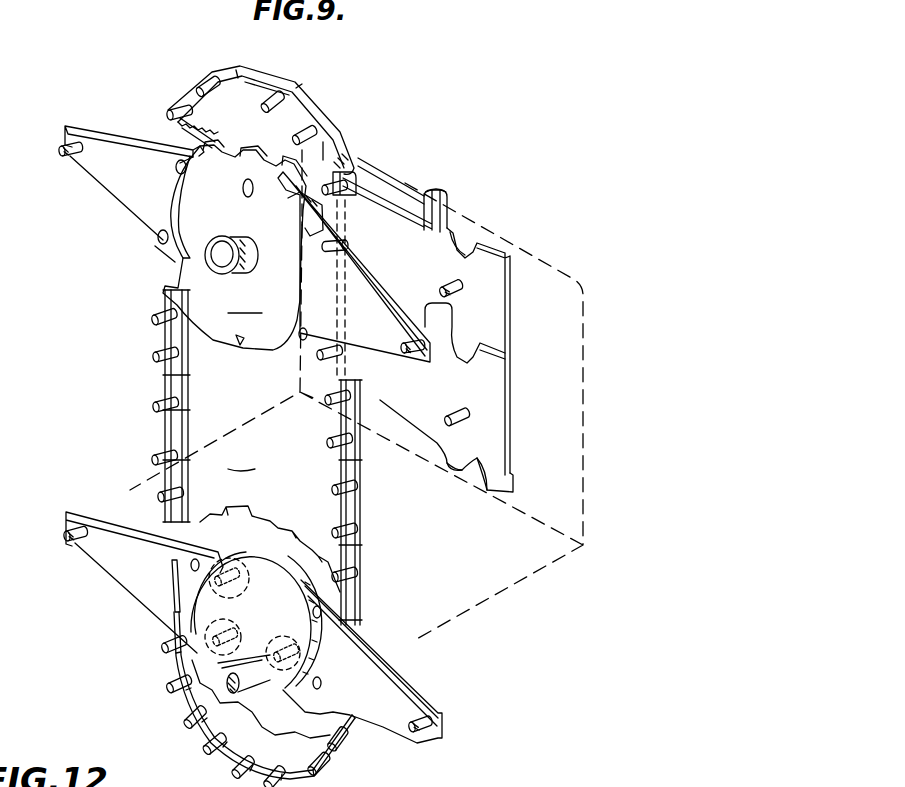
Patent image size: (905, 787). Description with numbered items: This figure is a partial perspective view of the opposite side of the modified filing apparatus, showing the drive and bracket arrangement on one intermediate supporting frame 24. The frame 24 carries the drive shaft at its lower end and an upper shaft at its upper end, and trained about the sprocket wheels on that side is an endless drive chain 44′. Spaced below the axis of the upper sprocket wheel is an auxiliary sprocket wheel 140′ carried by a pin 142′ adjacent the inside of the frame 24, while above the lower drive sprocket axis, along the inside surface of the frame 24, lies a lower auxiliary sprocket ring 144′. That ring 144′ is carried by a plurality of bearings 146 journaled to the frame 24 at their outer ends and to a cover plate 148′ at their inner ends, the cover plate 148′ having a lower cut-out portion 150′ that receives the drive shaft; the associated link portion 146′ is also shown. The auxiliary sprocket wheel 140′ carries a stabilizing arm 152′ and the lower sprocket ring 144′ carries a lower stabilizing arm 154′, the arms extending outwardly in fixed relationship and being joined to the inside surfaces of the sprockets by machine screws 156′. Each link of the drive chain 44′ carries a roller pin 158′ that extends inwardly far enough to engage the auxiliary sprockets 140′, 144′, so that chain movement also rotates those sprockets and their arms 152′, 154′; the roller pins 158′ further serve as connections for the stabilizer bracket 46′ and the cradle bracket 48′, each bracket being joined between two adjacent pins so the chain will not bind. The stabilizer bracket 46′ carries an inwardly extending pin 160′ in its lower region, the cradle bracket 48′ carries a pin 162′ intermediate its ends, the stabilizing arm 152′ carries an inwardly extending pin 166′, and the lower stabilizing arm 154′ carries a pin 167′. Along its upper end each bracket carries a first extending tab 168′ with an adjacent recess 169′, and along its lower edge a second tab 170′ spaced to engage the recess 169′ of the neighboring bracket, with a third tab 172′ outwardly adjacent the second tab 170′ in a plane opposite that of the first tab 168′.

The intermediate supporting frame 24 is at (241, 459).
The endless drive chain 44′ is at (170, 424).
The stabilizer bracket 46′ is at (505, 400).
The cradle bracket 48′ is at (497, 273).
The auxiliary sprocket wheel 140′ is at (243, 245).
The pin 142′ is at (245, 258).
The lower auxiliary sprocket ring 144′ is at (412, 512).
The bearing 146 is at (220, 634).
The chain link 146′ is at (203, 521).
The cover plate 148′ is at (267, 577).
The lower cut-out portion 150′ is at (332, 751).
The stabilizing arm 152′ is at (108, 158).
The lower stabilizing arm 154′ is at (113, 563).
The machine screw 156′ is at (158, 237).
The roller pin 158′ is at (162, 312).
The pin 160′ is at (462, 426).
The pin 162′ is at (452, 297).
The pin 166′ is at (62, 158).
The pin 167′ is at (52, 537).
The first extending tab 168′ is at (436, 202).
The recess 169′ is at (453, 228).
The second tab 170′ is at (456, 472).
The third tab 172′ is at (513, 491).